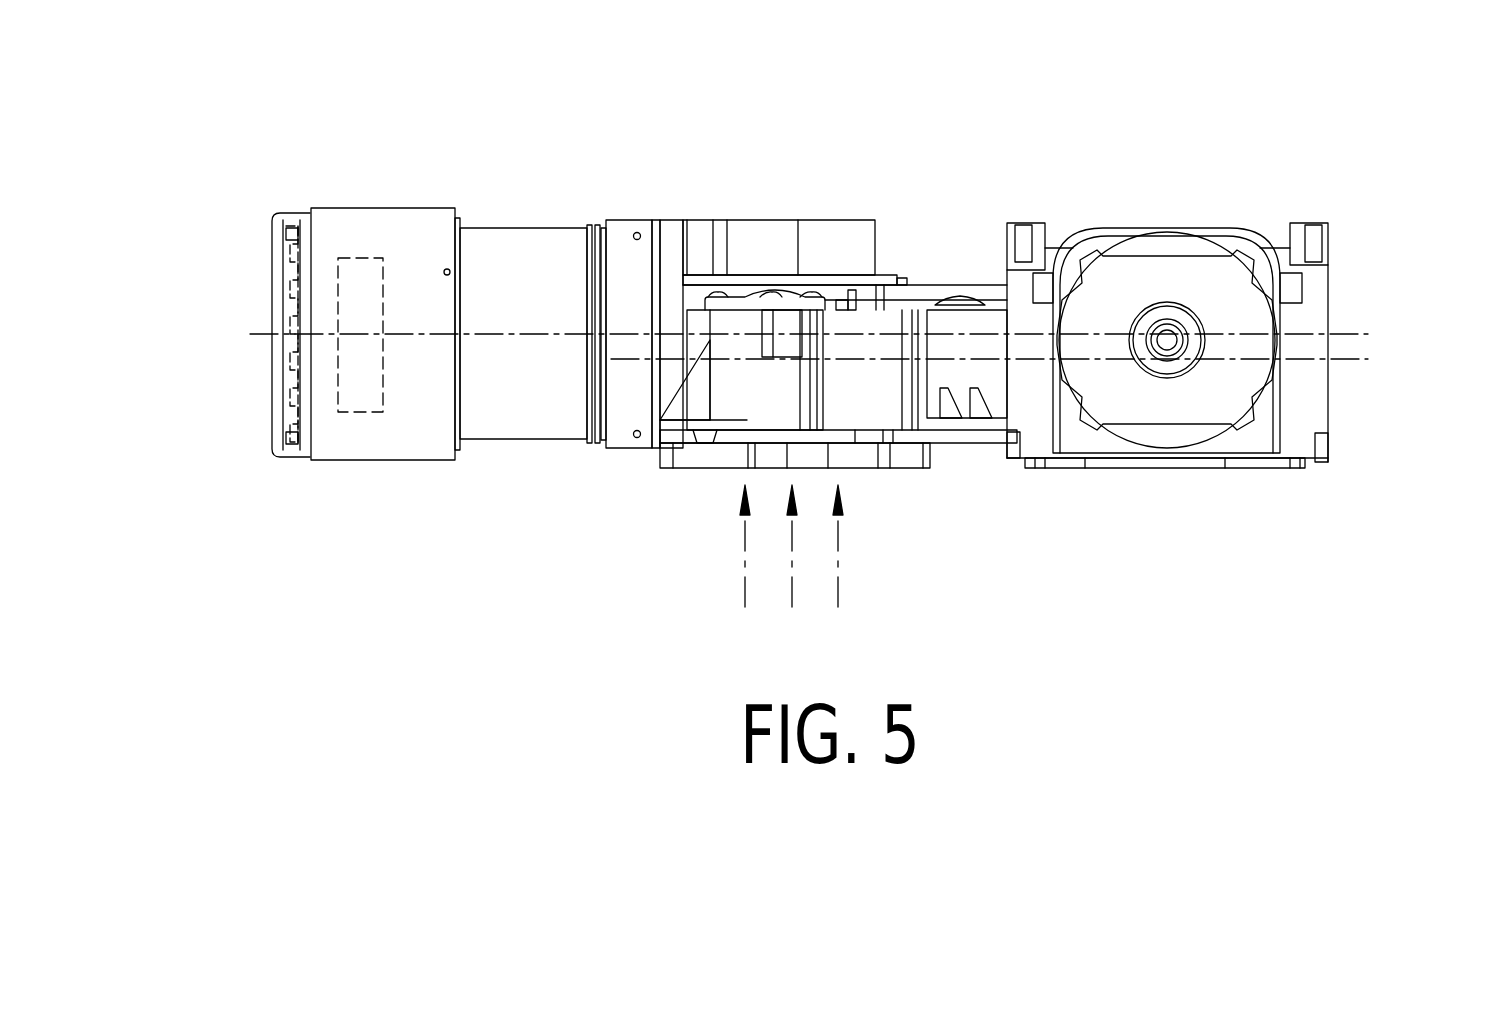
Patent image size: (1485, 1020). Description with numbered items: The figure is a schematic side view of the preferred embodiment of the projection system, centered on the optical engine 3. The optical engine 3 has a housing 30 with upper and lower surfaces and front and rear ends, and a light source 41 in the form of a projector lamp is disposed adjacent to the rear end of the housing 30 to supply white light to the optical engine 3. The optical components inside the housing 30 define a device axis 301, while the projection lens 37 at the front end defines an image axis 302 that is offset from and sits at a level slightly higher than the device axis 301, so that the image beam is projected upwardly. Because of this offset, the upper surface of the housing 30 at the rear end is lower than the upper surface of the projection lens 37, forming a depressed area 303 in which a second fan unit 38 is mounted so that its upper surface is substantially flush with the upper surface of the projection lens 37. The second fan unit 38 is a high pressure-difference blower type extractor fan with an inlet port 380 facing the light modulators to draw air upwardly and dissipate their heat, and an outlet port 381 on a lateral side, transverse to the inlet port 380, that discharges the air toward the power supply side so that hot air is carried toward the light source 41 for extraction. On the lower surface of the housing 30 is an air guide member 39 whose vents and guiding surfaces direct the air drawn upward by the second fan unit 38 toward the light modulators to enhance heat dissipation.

The optical engine 3 is at (623, 458).
The housing 30 is at (625, 223).
The projection lens 37 is at (393, 215).
The second fan unit 38 is at (752, 218).
The inlet port 380 is at (773, 292).
The outlet port 381 is at (840, 230).
The depressed area 303 is at (915, 237).
The air guide member 39 is at (720, 463).
The light source 41 is at (1152, 268).
The device axis 301 is at (1352, 360).
The image axis 302 is at (263, 335).